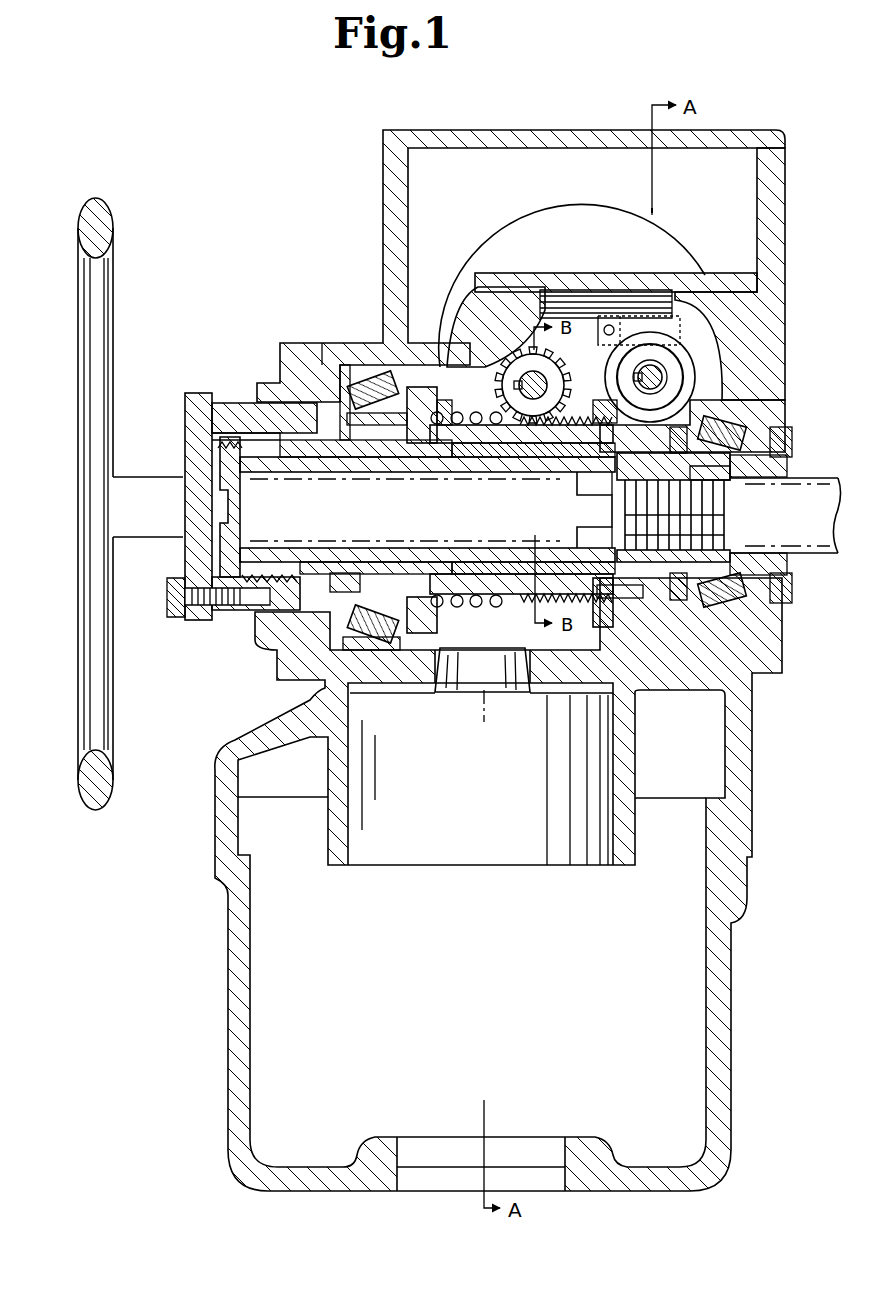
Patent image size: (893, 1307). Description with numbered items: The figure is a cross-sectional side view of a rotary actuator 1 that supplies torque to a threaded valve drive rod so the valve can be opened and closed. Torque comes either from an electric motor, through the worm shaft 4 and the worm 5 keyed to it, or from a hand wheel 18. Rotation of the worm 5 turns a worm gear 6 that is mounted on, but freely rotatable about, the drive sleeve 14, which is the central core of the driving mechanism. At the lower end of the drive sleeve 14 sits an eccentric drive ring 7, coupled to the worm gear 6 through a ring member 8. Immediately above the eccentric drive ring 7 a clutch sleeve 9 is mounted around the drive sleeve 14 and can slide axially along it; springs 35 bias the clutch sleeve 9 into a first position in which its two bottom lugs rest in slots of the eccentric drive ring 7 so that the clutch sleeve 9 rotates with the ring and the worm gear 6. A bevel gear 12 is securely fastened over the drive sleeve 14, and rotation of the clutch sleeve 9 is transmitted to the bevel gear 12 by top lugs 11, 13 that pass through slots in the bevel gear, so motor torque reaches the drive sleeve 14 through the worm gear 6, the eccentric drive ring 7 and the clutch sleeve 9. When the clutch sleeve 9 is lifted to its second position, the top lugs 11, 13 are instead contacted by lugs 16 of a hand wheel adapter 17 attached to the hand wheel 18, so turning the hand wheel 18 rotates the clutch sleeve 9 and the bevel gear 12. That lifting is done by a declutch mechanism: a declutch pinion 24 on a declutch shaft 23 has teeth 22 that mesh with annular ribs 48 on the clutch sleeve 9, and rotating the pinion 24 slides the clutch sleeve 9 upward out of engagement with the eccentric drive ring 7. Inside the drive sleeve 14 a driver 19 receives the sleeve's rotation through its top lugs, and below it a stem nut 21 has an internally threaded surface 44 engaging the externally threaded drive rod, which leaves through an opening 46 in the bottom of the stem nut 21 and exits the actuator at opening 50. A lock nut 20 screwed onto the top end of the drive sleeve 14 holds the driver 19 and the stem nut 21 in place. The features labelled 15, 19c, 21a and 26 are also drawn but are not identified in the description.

The rotary actuator 1 is at (334, 311).
The worm shaft 4 is at (656, 378).
The worm 5 is at (702, 392).
The worm gear 6 is at (742, 409).
The eccentric drive ring 7 is at (609, 400).
The ring member 8 is at (618, 603).
The clutch sleeve 9 is at (456, 440).
The top lug 11 is at (400, 582).
The bevel gear 12 is at (416, 447).
The top lug 13 is at (372, 456).
The drive sleeve 14 is at (328, 453).
The piston 15 is at (522, 645).
The lugs 16 is at (341, 578).
The hand wheel adapter 17 is at (222, 415).
The hand wheel 18 is at (78, 447).
The driver 19 is at (279, 556).
The spindle shoulder 19c is at (580, 500).
The lock nut 20 is at (224, 552).
The stem nut 21 is at (704, 472).
The hub recess 21a is at (597, 507).
The teeth 22 is at (562, 410).
The declutch shaft 23 is at (540, 371).
The declutch pinion 24 is at (524, 369).
The balls 26 is at (498, 414).
The springs 35 is at (482, 416).
The internally threaded surface 44 is at (700, 538).
The opening 46 is at (735, 480).
The annular ribs 48 is at (563, 412).
The opening 50 is at (790, 477).